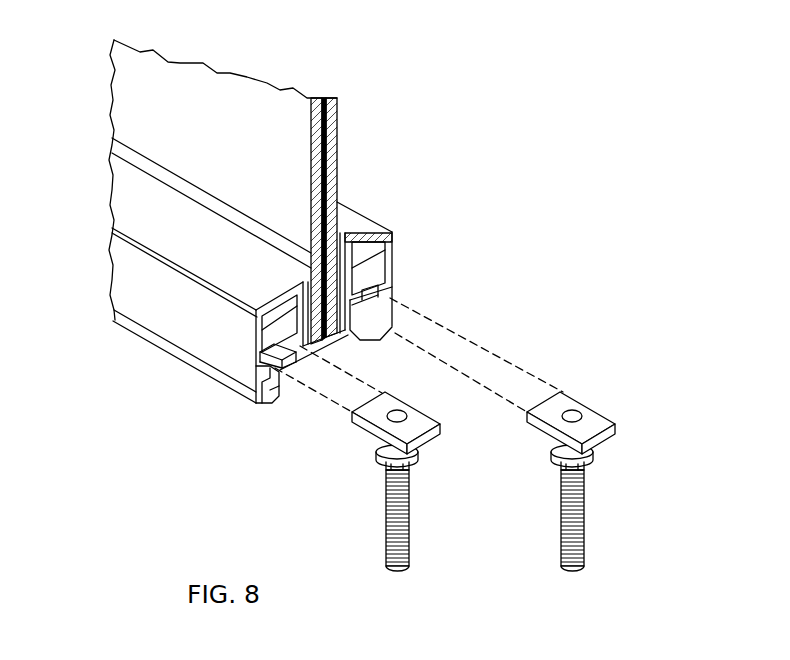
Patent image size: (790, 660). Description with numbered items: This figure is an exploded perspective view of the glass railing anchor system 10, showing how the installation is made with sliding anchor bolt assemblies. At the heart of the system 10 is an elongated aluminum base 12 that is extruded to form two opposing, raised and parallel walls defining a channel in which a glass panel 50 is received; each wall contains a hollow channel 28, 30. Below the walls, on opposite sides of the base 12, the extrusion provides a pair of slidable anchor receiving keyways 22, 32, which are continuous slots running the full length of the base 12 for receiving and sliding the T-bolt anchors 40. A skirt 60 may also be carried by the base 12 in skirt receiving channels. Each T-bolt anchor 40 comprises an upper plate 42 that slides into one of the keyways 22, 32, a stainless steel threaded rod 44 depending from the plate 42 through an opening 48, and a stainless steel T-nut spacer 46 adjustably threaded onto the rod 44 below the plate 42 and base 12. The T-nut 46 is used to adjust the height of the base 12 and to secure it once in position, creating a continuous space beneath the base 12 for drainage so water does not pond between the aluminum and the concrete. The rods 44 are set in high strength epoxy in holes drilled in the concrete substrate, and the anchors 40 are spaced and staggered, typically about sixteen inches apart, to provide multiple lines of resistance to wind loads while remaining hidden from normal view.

The glass railing anchor system 10 is at (382, 305).
The elongated aluminum base 12 is at (293, 287).
The slidable anchor receiving keyway 22 is at (258, 367).
The hollow channel 28 is at (290, 301).
The hollow channel 30 is at (380, 262).
The slidable anchor receiving keyway 32 is at (378, 298).
The T-bolt anchor 40 is at (464, 441).
The upper plate 42 is at (351, 420).
The threaded rod 44 is at (410, 538).
The T-nut spacer 46 is at (418, 454).
The hole 48 is at (408, 414).
The glass panel 50 is at (279, 93).
The skirt 60 is at (153, 347).